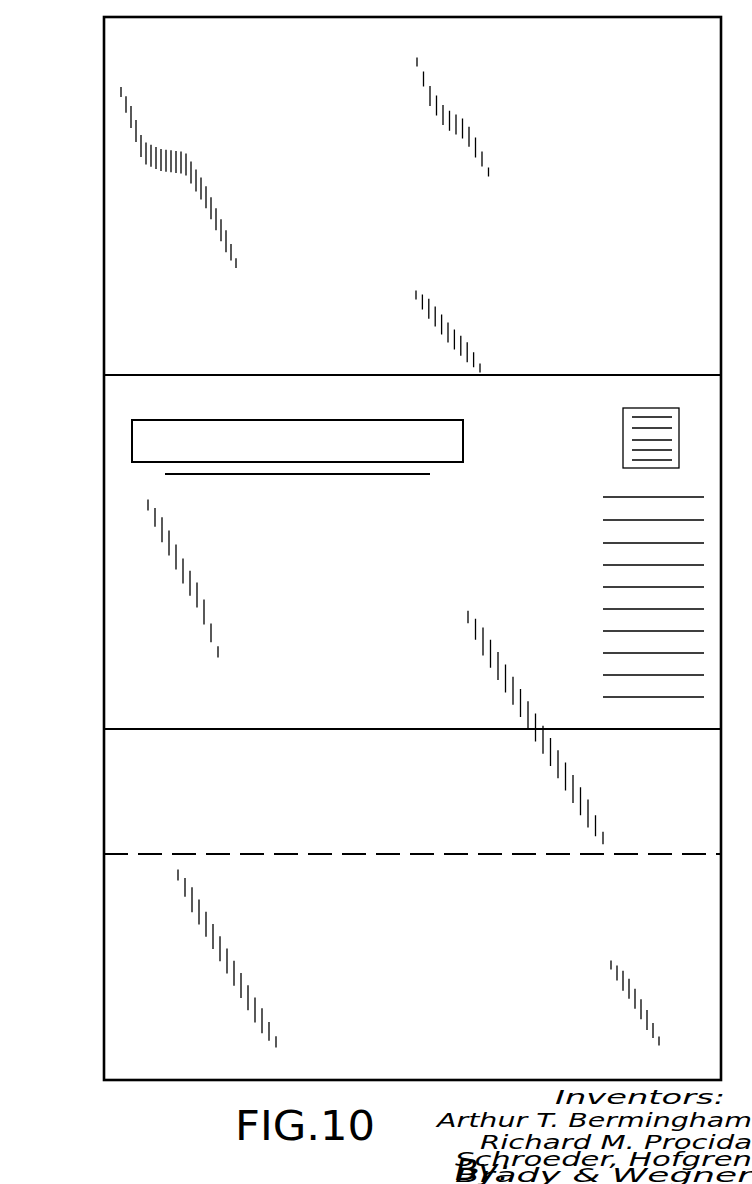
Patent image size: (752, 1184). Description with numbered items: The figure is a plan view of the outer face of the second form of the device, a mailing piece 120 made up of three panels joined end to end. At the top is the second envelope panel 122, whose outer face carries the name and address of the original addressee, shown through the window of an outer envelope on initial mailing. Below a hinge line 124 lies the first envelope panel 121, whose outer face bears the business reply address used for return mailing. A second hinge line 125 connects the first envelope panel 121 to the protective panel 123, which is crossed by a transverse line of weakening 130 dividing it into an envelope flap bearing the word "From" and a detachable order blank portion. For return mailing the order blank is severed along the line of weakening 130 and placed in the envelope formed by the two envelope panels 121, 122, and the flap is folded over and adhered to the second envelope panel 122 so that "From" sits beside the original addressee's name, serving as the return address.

The mailing piece 120 is at (100, 96).
The second envelope panel 122 is at (113, 250).
The hinge line 124 is at (104, 375).
The first envelope panel 121 is at (118, 572).
The hinge line 125 is at (104, 729).
The line of weakening 130 is at (104, 854).
The protective panel 123 is at (125, 948).